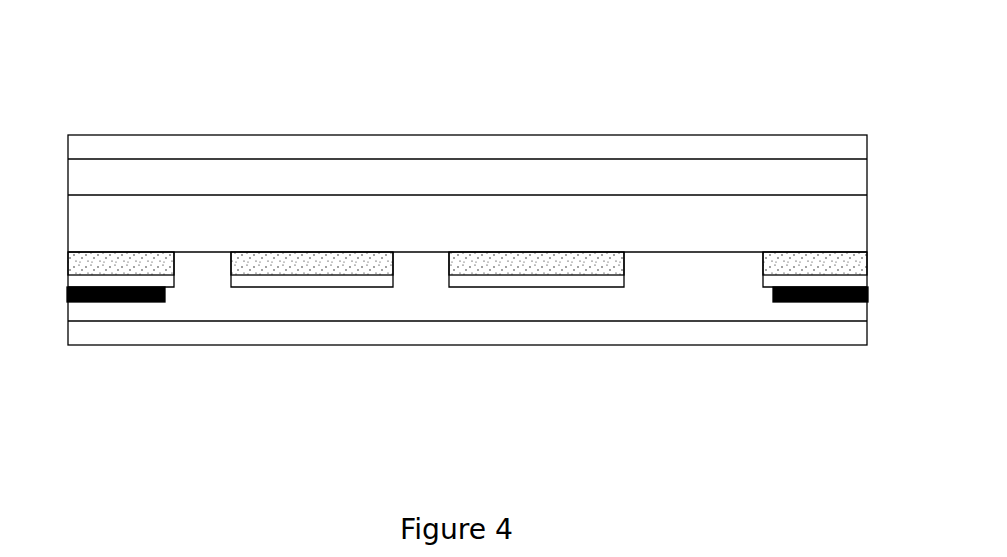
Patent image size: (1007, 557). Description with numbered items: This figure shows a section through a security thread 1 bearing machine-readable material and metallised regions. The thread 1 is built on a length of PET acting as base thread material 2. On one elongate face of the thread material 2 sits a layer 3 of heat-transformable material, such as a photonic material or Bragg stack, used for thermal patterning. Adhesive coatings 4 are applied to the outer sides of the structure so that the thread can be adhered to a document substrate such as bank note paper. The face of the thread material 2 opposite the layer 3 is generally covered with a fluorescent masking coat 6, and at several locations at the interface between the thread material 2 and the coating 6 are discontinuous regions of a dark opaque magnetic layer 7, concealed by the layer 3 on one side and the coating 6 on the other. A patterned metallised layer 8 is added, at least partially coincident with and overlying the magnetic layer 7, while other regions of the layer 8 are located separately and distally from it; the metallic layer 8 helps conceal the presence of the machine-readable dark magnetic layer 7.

The thread 1 is at (152, 73).
The base thread material 2 is at (716, 207).
The layer of heat-transformable material 3 is at (417, 165).
The adhesive coatings 4 is at (358, 160).
The fluorescent masking coat 6 is at (641, 311).
The magnetic layer 7 is at (837, 313).
The patterned metallised layer 8 is at (260, 280).